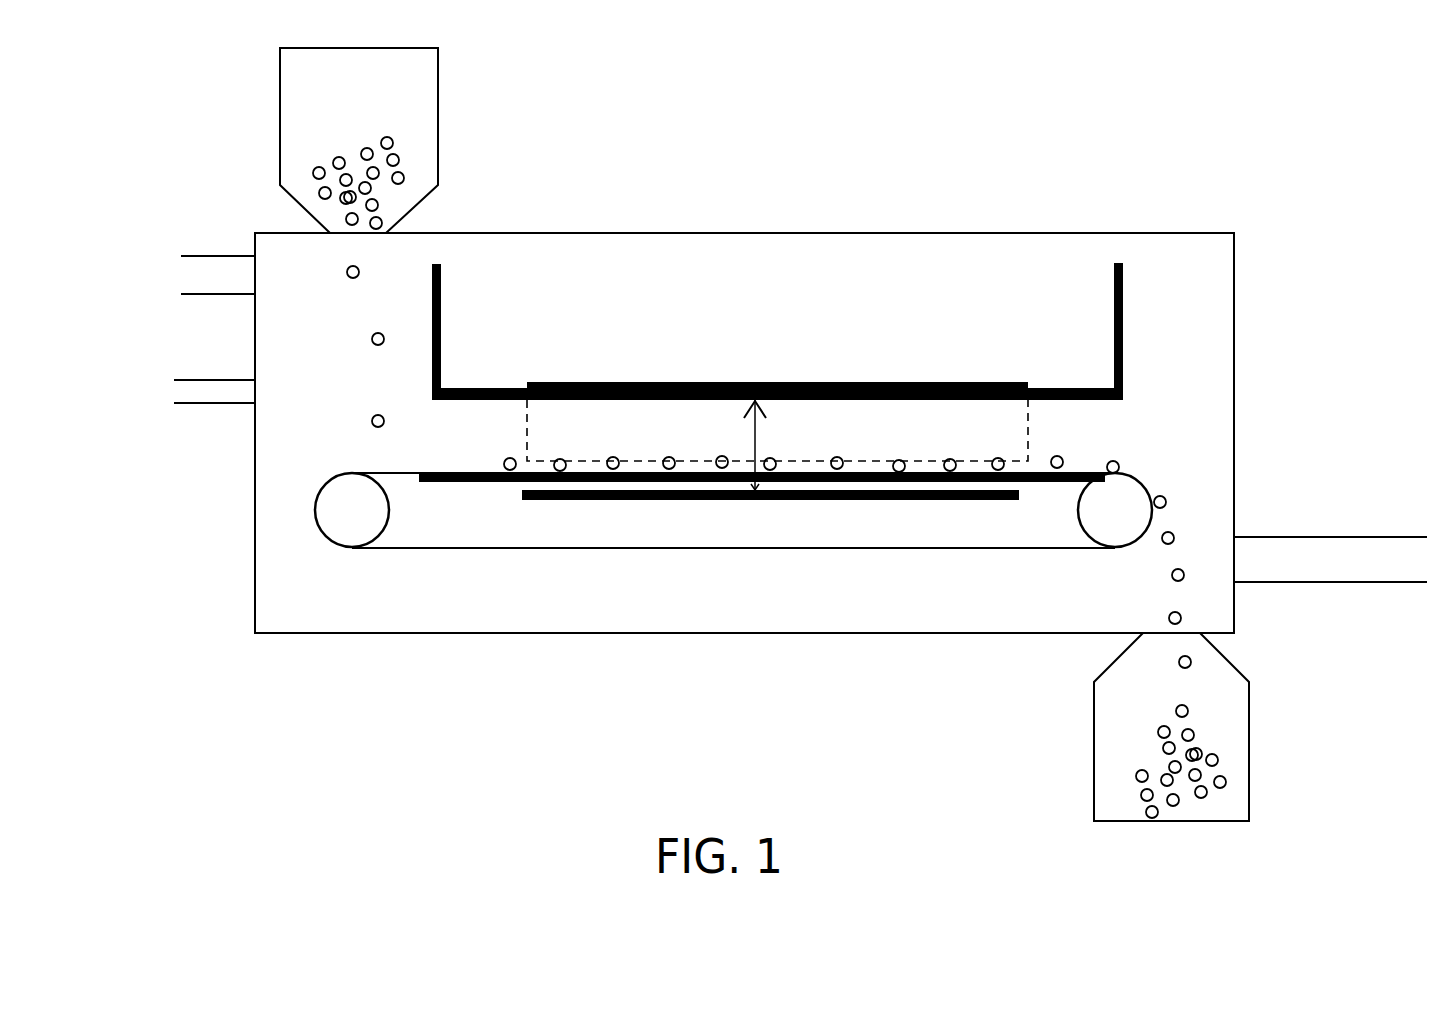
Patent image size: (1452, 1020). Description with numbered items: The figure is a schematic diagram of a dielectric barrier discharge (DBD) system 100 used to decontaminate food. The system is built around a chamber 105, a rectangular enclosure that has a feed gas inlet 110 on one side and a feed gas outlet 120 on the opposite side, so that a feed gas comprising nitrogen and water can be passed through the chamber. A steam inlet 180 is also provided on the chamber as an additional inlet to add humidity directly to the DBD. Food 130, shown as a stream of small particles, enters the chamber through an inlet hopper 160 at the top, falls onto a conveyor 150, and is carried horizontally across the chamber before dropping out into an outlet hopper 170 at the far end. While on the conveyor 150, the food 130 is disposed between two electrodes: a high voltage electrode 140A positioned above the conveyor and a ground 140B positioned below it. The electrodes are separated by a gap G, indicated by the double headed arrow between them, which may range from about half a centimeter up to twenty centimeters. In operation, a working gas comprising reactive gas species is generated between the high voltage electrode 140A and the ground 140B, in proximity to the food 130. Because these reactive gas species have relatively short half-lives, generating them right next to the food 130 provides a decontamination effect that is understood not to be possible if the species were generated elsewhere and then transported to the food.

The dielectric barrier discharge (DBD) system 100 is at (1222, 106).
The chamber 105 is at (868, 233).
The feed gas inlet 110 is at (193, 277).
The feed gas outlet 120 is at (1343, 563).
The food 130 is at (407, 179).
The high voltage electrode 140A is at (786, 382).
The ground 140B is at (924, 500).
The conveyor 150 is at (313, 522).
The inlet hopper 160 is at (292, 119).
The outlet hopper 170 is at (1230, 713).
The steam inlet 180 is at (193, 392).
The gap G is at (757, 446).